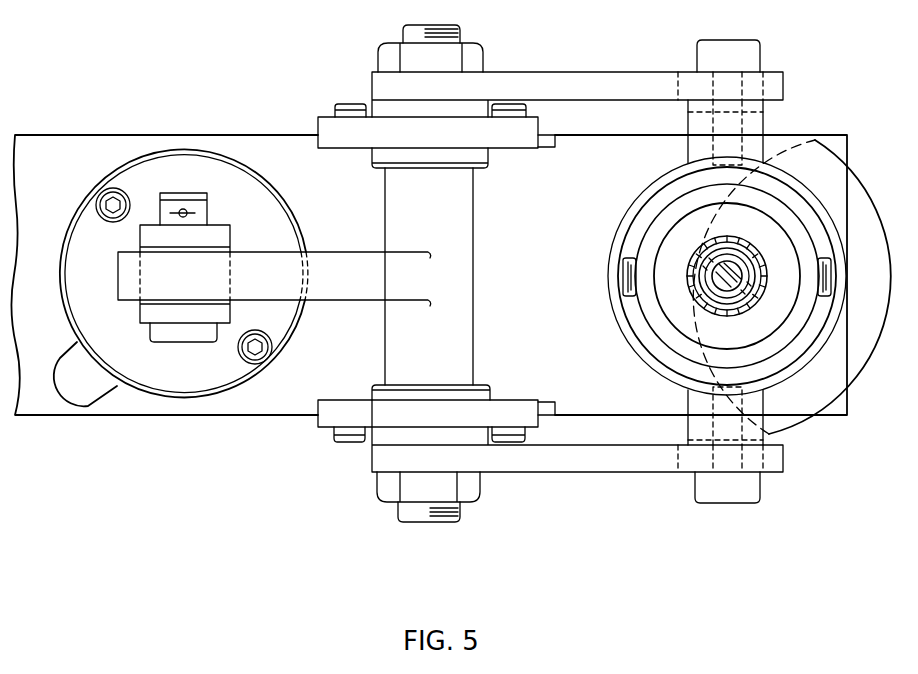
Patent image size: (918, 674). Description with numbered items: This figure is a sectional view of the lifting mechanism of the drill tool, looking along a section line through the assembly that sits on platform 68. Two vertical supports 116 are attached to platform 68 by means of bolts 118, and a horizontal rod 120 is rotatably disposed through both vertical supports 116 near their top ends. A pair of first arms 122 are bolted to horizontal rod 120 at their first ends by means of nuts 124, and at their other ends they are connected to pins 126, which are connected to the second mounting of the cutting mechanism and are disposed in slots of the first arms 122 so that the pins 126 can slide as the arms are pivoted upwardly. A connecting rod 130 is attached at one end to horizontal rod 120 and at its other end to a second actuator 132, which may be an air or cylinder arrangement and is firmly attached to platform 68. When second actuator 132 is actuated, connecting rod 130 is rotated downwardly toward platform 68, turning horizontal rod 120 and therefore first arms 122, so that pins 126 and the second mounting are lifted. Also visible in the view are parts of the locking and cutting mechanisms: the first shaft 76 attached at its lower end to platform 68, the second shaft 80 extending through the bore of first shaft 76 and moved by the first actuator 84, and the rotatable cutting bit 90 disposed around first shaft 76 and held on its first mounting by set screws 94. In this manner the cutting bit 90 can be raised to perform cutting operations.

The platform 68 is at (55, 142).
The first shaft 76 is at (722, 252).
The second shaft 80 is at (747, 298).
The first actuator 84 is at (857, 355).
The rotatable cutting bit 90 is at (750, 240).
The set screws 94 is at (627, 278).
The vertical supports 116 is at (325, 128).
The bolts 118 is at (350, 104).
The horizontal rod 120 is at (465, 277).
The first arms 122 is at (638, 80).
The nuts 124 is at (470, 52).
The pins 126 is at (755, 53).
The connecting rod 130 is at (327, 258).
The second actuator 132 is at (185, 316).